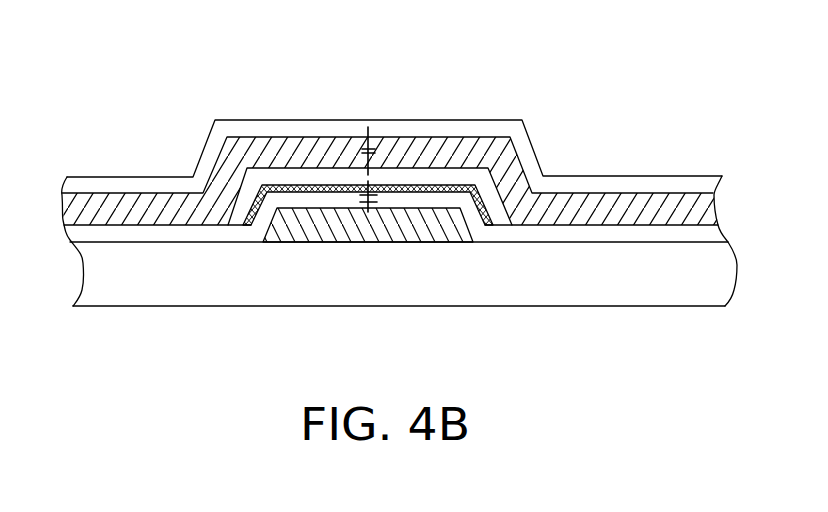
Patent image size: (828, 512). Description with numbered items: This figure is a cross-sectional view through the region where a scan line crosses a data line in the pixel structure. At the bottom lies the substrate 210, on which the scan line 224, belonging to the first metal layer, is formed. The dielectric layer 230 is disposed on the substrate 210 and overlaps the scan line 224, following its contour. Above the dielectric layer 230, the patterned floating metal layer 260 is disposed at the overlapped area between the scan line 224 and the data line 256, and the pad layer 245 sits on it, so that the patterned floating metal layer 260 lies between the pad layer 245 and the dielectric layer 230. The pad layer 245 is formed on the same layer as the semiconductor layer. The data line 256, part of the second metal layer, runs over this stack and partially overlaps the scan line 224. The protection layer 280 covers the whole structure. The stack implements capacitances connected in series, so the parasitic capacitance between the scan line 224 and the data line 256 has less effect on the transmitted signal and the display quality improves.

The substrate 210 is at (655, 285).
The scan line 224 is at (423, 232).
The dielectric layer 230 is at (583, 230).
The pad layer 245 is at (499, 228).
The data line 256 is at (575, 200).
The patterned floating metal layer 260 is at (308, 184).
The protection layer 280 is at (653, 185).